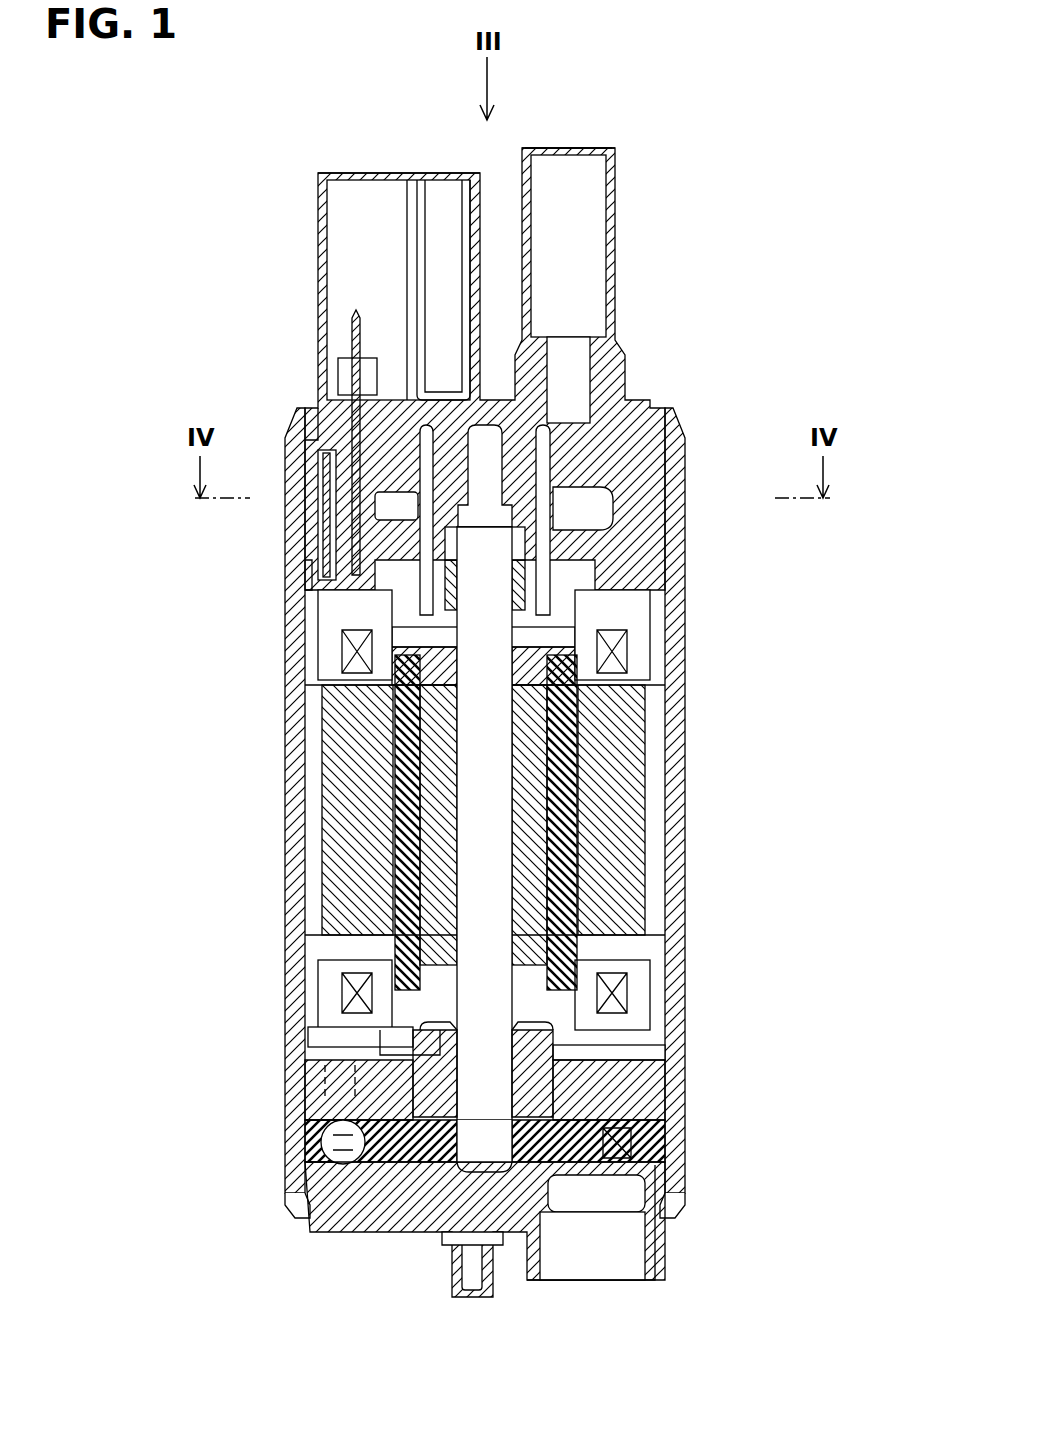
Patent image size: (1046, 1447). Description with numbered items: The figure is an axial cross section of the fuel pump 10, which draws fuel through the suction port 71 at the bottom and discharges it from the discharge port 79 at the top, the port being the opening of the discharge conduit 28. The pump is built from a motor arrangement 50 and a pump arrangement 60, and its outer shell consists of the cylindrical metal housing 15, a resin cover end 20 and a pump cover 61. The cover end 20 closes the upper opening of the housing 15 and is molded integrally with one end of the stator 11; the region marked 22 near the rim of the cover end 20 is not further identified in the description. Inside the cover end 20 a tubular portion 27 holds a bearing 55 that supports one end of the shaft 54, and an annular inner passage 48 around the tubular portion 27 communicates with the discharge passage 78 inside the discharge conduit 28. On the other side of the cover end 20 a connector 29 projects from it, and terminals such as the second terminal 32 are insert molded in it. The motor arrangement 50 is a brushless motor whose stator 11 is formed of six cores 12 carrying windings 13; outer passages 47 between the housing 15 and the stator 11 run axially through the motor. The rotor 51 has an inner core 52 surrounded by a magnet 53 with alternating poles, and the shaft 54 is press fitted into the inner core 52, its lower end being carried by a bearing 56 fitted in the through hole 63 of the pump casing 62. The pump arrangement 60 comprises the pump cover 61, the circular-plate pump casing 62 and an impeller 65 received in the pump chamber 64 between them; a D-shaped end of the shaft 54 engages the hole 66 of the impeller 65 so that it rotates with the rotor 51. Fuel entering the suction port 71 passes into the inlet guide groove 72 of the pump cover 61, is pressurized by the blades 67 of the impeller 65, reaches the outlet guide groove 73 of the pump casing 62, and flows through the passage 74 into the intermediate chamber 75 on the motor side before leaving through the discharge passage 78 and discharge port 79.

The fuel pump 10 is at (676, 128).
The stator 11 is at (630, 886).
The cores 12 is at (650, 618).
The windings 13 is at (625, 646).
The housing 15 is at (296, 568).
The cover end 20 is at (658, 428).
The cover flange 22 is at (328, 432).
The tubular portion 27 is at (530, 472).
The discharge conduit 28 is at (614, 234).
The connector 29 is at (320, 253).
The second terminal 32 is at (352, 345).
The outer passages 47 is at (318, 773).
The inner passage 48 is at (545, 503).
The motor arrangement 50 is at (780, 702).
The rotor 51 is at (600, 822).
The inner core 52 is at (527, 775).
The magnet 53 is at (563, 808).
The shaft 54 is at (503, 735).
The bearing 55 is at (525, 598).
The bearing 56 is at (527, 1085).
The pump arrangement 60 is at (776, 1098).
The pump cover 61 is at (390, 1210).
The pump casing 62 is at (420, 1170).
The through hole 63 is at (408, 1035).
The pump chamber 64 is at (330, 1148).
The impeller 65 is at (640, 1150).
The hole 66 is at (500, 1160).
The blades 67 is at (620, 1133).
The suction port 71 is at (600, 1280).
The inlet guide groove 72 is at (342, 1175).
The outlet guide groove 73 is at (338, 1112).
The passage 74 is at (343, 1082).
The intermediate chamber 75 is at (337, 1050).
The discharge passage 78 is at (590, 278).
The discharge port 79 is at (572, 148).